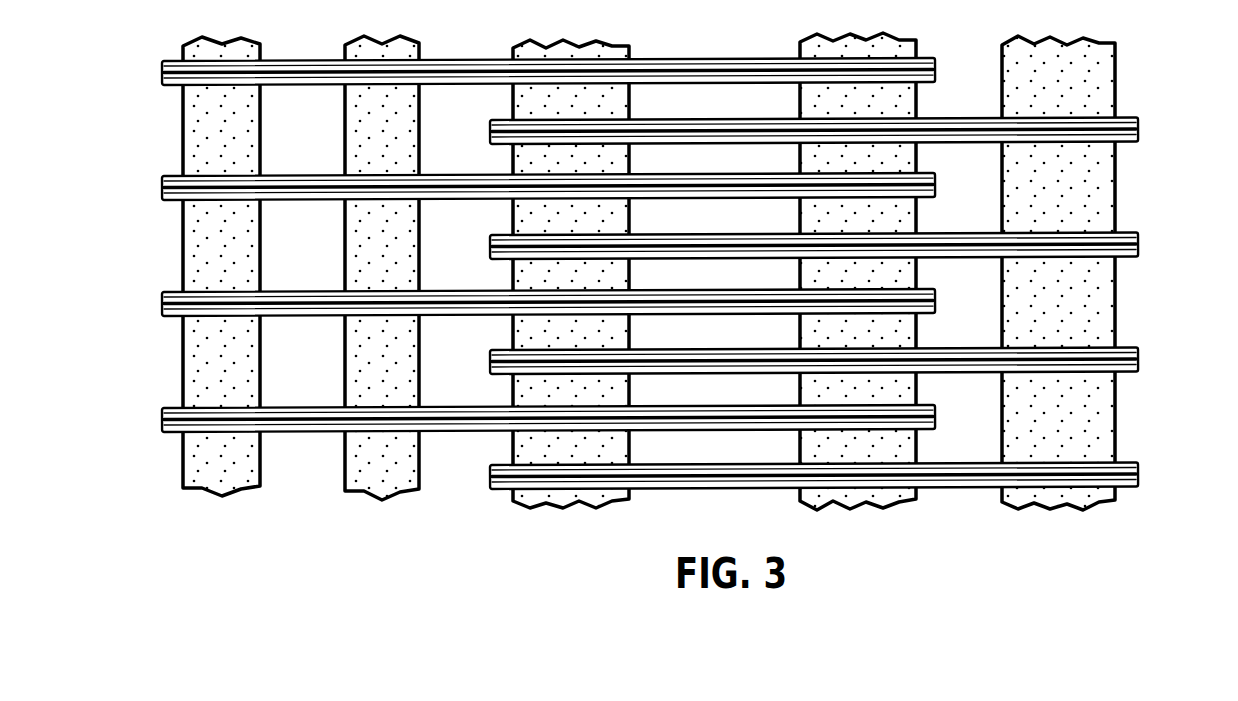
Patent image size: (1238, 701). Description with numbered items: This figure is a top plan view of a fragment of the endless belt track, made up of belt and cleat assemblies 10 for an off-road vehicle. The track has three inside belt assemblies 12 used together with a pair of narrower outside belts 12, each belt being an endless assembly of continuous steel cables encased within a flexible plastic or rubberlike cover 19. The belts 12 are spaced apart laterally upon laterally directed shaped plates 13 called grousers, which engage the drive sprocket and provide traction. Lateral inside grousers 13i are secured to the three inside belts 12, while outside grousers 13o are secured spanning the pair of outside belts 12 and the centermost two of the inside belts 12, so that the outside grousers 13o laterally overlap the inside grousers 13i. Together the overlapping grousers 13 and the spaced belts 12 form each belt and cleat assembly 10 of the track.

The belt and cleat assembly 10 is at (639, 279).
The belt assembly 12 is at (644, 296).
The grouser 13 is at (410, 478).
The inside grouser 13i is at (1087, 342).
The outside grouser 13o is at (300, 405).
The rubberlike cover 19 is at (631, 273).